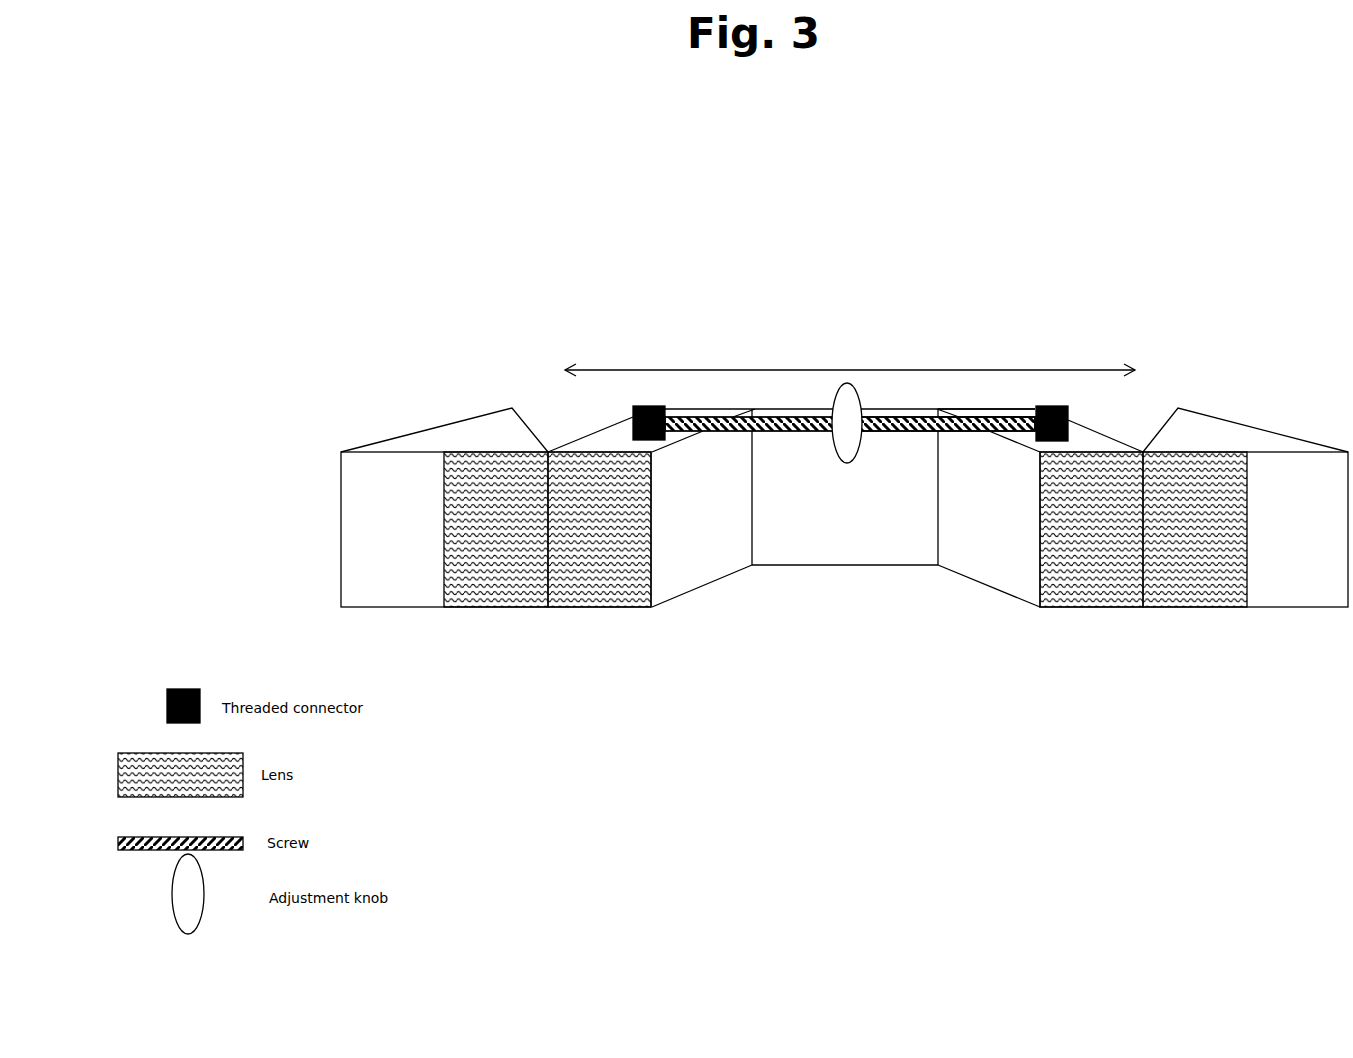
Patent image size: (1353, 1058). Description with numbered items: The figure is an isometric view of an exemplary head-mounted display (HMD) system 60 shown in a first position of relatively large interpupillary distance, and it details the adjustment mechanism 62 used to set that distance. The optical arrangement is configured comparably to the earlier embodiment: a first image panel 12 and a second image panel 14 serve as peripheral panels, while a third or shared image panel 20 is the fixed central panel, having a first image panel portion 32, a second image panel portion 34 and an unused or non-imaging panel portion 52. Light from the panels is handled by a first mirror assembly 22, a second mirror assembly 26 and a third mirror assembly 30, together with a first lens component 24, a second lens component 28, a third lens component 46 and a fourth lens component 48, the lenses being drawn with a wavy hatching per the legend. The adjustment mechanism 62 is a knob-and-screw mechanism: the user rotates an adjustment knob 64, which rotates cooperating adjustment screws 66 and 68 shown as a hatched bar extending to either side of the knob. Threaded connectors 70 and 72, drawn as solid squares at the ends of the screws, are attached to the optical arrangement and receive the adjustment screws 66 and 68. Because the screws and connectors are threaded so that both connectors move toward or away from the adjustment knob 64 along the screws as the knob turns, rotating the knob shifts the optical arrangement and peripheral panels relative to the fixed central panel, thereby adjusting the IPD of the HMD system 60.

The head-mounted display (HMD) system 60 is at (802, 197).
The first image panel 12 is at (1300, 607).
The second image panel 14 is at (402, 603).
The third or shared image panel 20 is at (910, 390).
The first mirror assembly 22 is at (1264, 421).
The first lens component 24 is at (1187, 607).
The second mirror assembly 26 is at (410, 418).
The second lens component 28 is at (500, 603).
The third mirror assembly 30 is at (699, 600).
The first image panel portion 32 is at (980, 409).
The second image panel portion 34 is at (695, 409).
The third lens component 46 is at (1087, 607).
The fourth lens component 48 is at (597, 603).
The unused or non-imaging panel portion 52 is at (857, 566).
The adjustment mechanism 62 is at (854, 492).
The adjustment knob 64 is at (830, 455).
The adjustment screw 66 is at (737, 416).
The adjustment screw 68 is at (953, 412).
The threaded connector 70 is at (637, 406).
The threaded connector 72 is at (1067, 406).